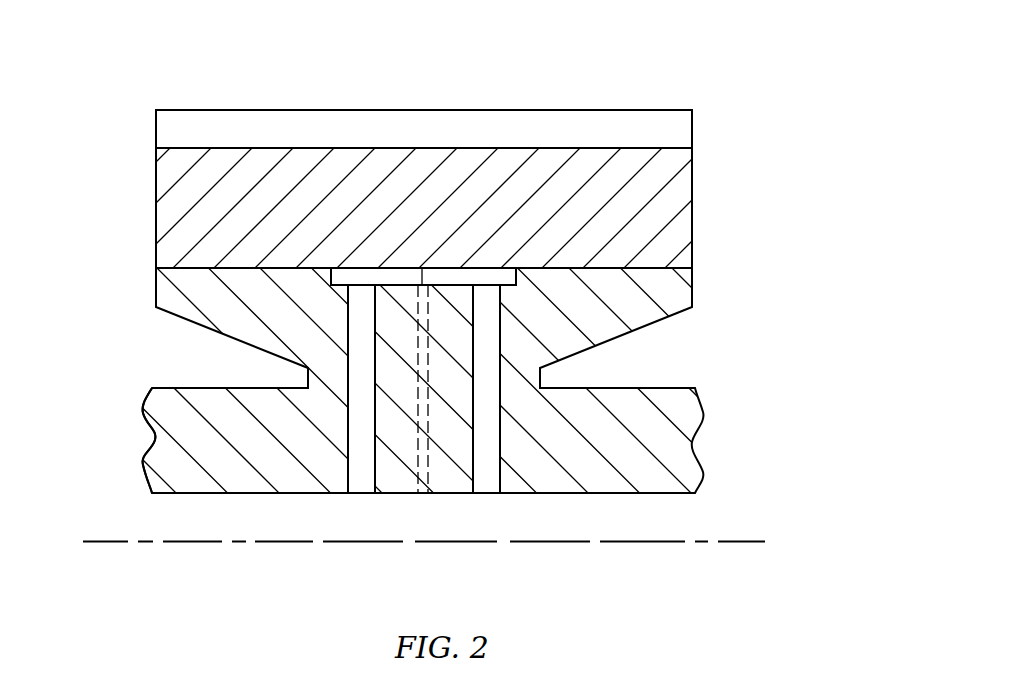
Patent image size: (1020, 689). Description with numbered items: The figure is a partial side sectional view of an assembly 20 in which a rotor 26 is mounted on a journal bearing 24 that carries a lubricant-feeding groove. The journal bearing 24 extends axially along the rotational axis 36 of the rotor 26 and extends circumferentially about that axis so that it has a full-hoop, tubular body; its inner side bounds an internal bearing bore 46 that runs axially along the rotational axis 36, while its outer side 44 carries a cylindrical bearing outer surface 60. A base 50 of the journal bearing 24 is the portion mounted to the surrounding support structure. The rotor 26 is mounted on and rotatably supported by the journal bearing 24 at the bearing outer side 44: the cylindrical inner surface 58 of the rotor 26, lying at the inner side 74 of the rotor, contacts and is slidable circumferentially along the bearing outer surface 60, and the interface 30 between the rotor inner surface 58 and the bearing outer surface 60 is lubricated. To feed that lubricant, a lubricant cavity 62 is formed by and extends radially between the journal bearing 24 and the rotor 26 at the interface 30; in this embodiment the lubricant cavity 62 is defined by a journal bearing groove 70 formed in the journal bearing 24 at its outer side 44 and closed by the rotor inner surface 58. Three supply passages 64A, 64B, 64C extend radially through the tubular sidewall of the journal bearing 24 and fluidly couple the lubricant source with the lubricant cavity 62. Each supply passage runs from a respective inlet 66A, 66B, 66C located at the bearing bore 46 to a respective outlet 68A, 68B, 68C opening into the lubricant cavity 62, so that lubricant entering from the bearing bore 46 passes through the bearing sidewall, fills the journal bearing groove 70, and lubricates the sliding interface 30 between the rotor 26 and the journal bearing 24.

The seal assembly 20 is at (474, 323).
The journal bearing 24 is at (387, 268).
The rotor 26 is at (714, 172).
The interface 30 is at (134, 268).
The rotational axis 36 is at (752, 543).
The outer side 44 is at (557, 241).
The cylindrical outer surface 60 is at (667, 267).
The cylindrical inner surface 58 is at (562, 282).
The inner side 74 is at (673, 270).
The lubricant cavity 62 is at (425, 237).
The journal bearing groove 70 is at (477, 267).
The outlet 68A is at (355, 283).
The outlet 68B is at (493, 284).
The outlet 68C is at (422, 268).
The supply passage 64A is at (367, 490).
The supply passage 64B is at (481, 490).
The supply passage 64C is at (418, 495).
The inlet 66A is at (360, 494).
The inlet 66B is at (489, 495).
The inlet 66C is at (426, 494).
The base 50 is at (152, 432).
The bearing bore 46 is at (697, 519).